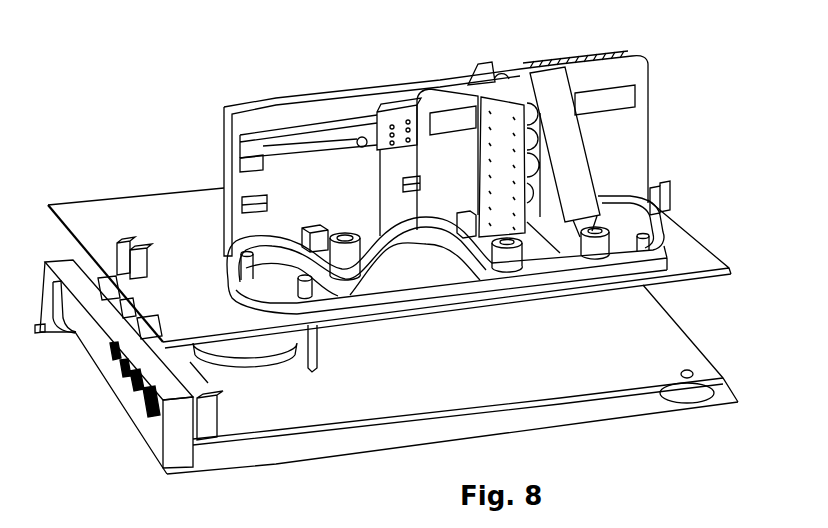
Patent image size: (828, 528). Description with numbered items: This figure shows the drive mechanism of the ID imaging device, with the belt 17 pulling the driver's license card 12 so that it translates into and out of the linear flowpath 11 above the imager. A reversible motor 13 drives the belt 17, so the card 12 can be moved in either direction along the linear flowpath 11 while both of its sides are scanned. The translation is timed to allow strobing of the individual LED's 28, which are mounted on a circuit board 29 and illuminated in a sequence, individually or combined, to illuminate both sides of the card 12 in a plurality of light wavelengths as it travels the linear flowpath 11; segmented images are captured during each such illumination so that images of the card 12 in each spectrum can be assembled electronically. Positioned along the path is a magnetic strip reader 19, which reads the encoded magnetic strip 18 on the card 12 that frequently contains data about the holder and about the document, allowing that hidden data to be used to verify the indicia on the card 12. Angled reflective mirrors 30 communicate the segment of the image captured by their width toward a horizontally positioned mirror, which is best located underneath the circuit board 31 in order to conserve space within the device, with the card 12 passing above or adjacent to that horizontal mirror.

The linear flowpath 11 is at (318, 72).
The driver's license card 12 is at (440, 101).
The reversible motor 13 is at (260, 347).
The belt 17 is at (268, 296).
The magnetic strip 18 is at (474, 109).
The magnetic strip reader 19 is at (392, 103).
The LED 28 is at (468, 80).
The circuit board 29 is at (512, 137).
The angled reflective mirror 30 is at (552, 61).
The circuit board 31 is at (152, 198).